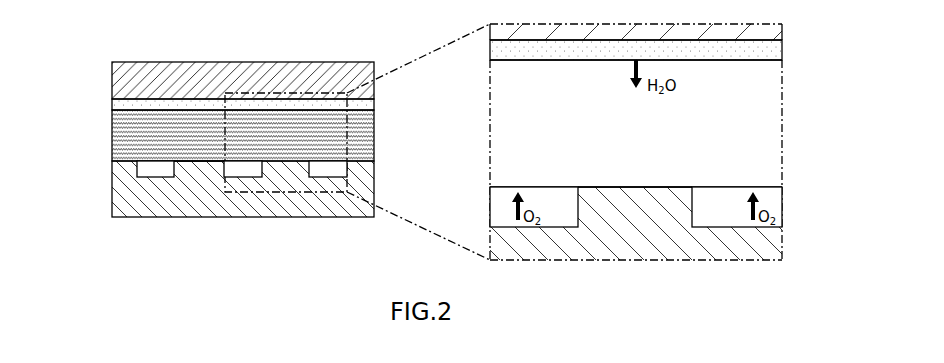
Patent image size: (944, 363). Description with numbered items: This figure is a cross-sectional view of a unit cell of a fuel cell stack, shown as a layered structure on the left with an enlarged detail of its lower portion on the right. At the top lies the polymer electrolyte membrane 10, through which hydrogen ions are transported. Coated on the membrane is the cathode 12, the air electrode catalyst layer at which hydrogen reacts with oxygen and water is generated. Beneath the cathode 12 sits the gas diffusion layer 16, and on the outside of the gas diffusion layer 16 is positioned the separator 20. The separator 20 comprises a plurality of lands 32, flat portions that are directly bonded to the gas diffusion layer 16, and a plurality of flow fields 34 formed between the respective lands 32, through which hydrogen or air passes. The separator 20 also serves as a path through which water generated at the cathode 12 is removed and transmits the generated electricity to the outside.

The polymer electrolyte membrane 10 is at (181, 72).
The cathode 12 is at (112, 103).
The gas diffusion layer 16 is at (112, 133).
The separator 20 is at (113, 197).
The land 32 is at (205, 157).
The flow field 34 is at (152, 168).